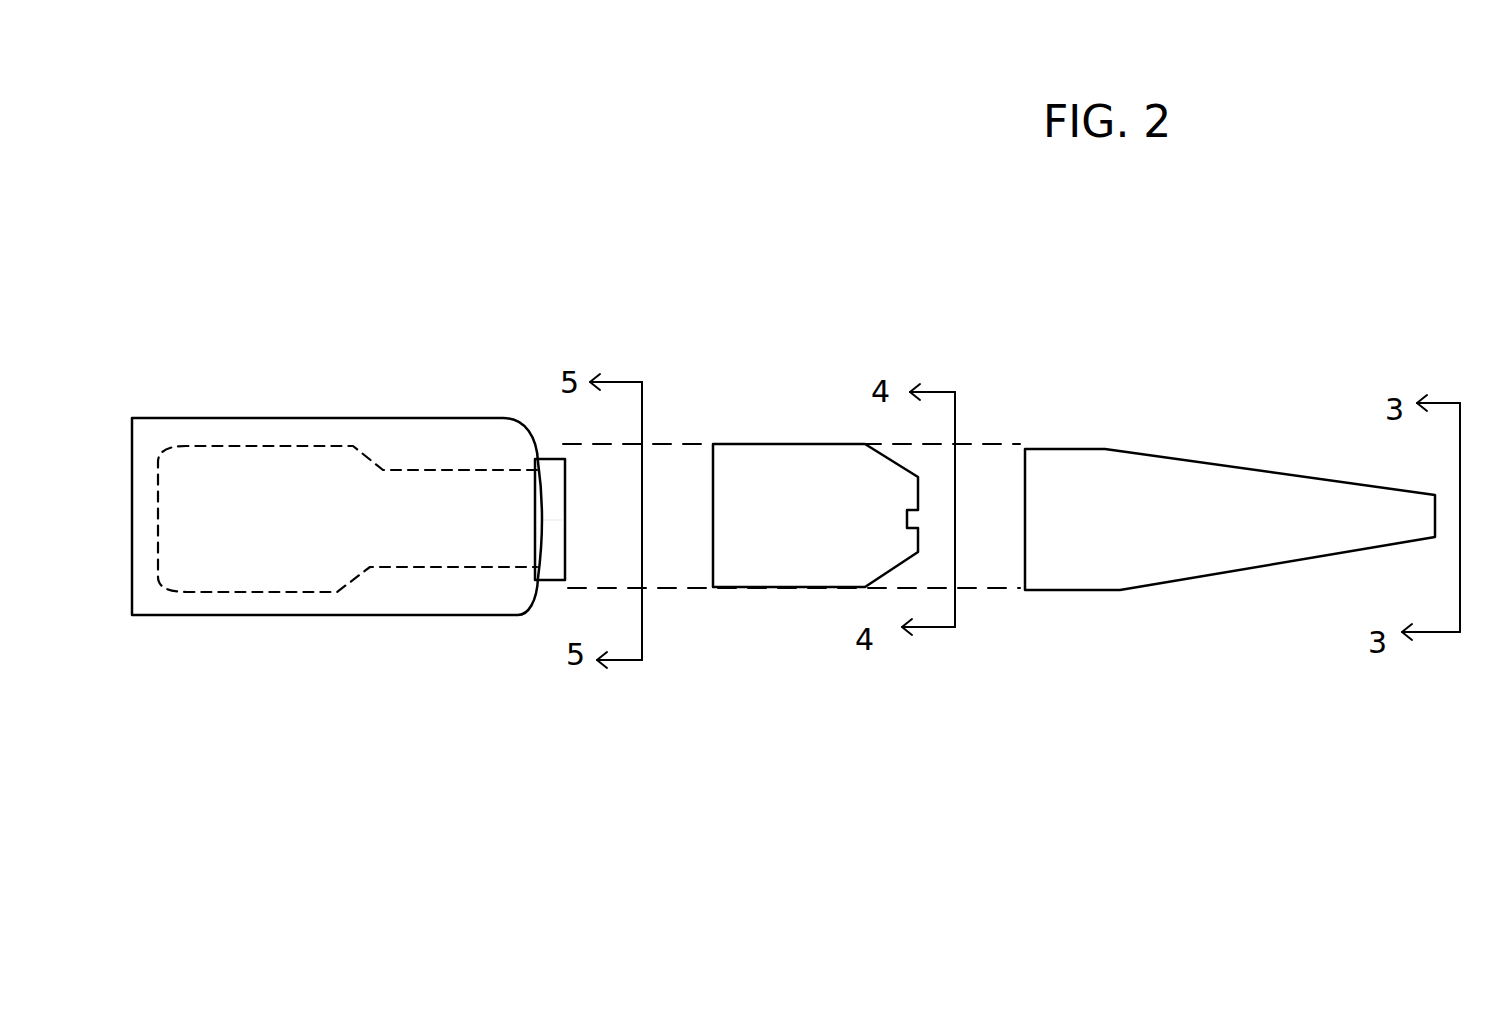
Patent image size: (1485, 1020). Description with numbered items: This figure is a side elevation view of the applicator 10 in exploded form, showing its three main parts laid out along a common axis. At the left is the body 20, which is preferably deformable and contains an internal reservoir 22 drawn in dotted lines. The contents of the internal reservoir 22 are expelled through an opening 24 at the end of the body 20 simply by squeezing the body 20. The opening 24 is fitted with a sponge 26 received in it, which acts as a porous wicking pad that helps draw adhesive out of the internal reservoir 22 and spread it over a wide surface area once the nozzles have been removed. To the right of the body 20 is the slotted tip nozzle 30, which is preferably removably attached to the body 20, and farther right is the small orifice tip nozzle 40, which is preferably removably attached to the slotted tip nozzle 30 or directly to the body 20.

The applicator 10 is at (742, 302).
The body 20 is at (380, 418).
The internal reservoir 22 is at (337, 527).
The opening 24 is at (540, 450).
The sponge 26 is at (552, 527).
The slotted tip nozzle 30 is at (790, 442).
The small orifice tip nozzle 40 is at (1212, 465).